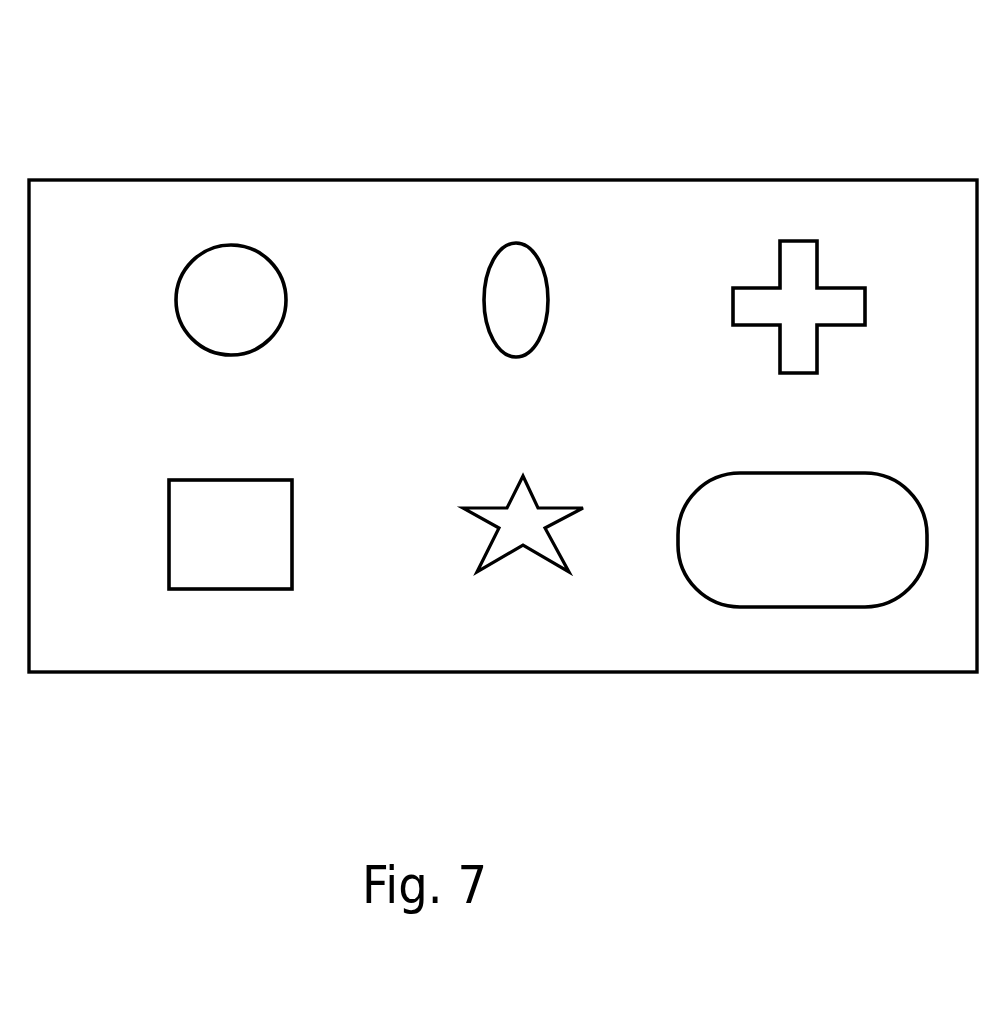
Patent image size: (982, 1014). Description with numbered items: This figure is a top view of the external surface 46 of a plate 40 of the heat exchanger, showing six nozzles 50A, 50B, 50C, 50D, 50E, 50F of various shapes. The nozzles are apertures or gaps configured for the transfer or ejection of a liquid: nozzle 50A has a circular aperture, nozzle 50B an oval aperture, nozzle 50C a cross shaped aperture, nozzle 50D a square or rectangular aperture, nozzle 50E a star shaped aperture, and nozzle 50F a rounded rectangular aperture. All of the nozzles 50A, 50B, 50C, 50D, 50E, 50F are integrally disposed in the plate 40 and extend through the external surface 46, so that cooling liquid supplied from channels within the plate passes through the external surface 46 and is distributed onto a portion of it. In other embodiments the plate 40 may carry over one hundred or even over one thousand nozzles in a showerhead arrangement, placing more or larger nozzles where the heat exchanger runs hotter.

The plate 40 is at (298, 117).
The external surface 46 is at (348, 397).
The nozzle 50A is at (227, 245).
The nozzle 50B is at (515, 242).
The nozzle 50C is at (803, 240).
The nozzle 50D is at (230, 590).
The nozzle 50E is at (508, 555).
The nozzle 50F is at (787, 607).